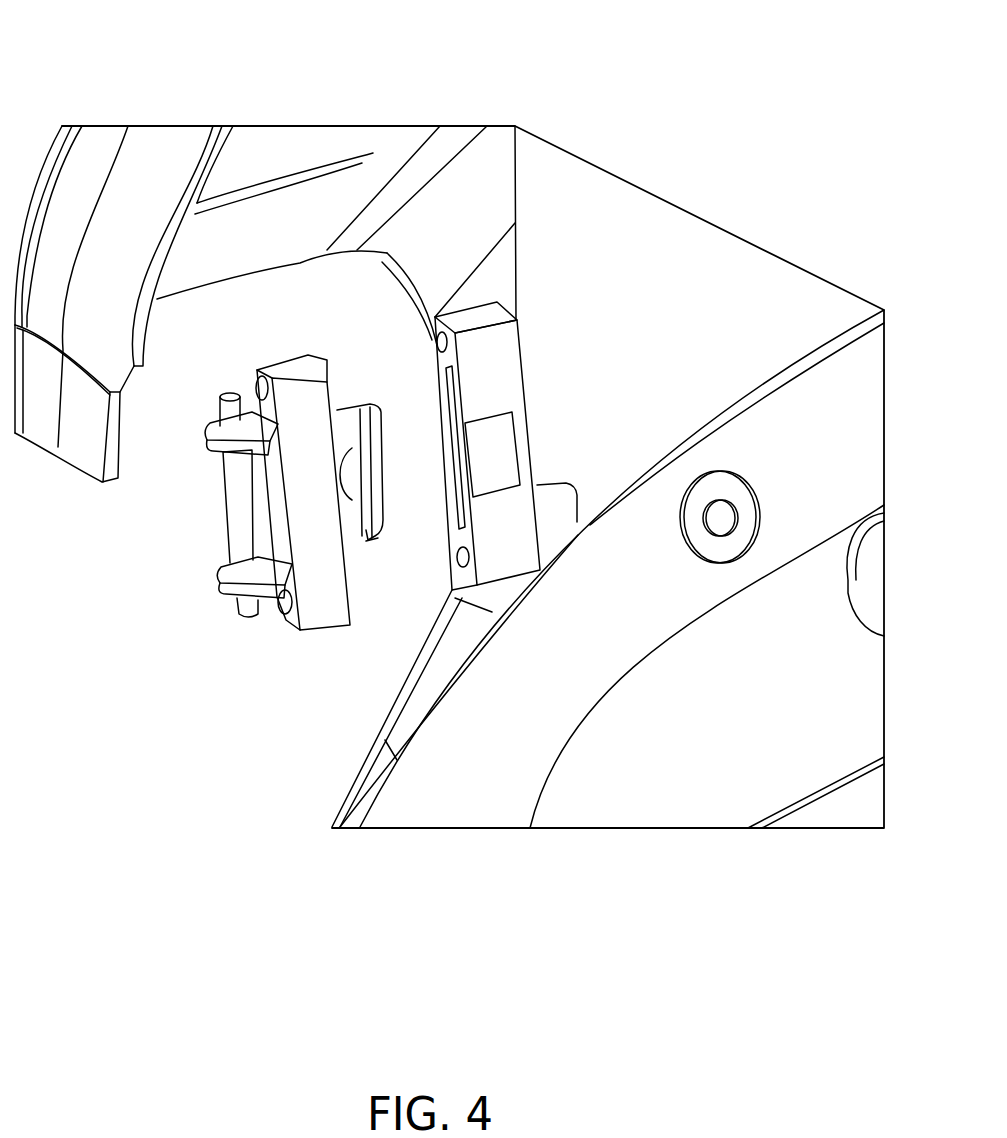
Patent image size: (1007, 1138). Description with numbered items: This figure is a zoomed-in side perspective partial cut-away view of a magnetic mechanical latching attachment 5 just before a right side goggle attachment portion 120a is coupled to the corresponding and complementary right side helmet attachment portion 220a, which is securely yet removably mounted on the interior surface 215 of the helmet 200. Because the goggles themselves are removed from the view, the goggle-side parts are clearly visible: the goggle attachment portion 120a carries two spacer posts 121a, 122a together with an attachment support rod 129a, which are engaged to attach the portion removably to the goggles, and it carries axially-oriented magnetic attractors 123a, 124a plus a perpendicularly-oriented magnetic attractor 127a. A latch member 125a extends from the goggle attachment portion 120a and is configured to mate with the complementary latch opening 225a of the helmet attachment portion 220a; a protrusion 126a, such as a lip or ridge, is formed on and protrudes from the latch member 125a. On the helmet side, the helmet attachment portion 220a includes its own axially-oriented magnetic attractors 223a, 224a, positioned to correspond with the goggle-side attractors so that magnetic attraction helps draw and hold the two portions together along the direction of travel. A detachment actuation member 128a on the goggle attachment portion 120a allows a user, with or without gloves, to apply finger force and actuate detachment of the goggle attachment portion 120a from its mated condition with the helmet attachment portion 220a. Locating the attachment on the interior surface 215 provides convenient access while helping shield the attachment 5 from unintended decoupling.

The magnetic mechanical latching attachment 5 is at (518, 101).
The helmet 200 is at (152, 97).
The interior surface 215 is at (263, 208).
The right side helmet attachment portion 220a is at (473, 312).
The axially-oriented magnetic attractor 223a is at (384, 250).
The axially-oriented magnetic attractor 224a is at (460, 565).
The latch opening 225a is at (440, 377).
The right side goggle attachment portion 120a is at (252, 524).
The spacer post 121a is at (208, 436).
The spacer post 122a is at (216, 578).
The axially-oriented magnetic attractor 123a is at (256, 384).
The axially-oriented magnetic attractor 124a is at (280, 612).
The latch member 125a is at (349, 415).
The protrusion 126a is at (389, 560).
The perpendicularly-oriented magnetic attractor 127a is at (354, 473).
The detachment actuation member 128a is at (327, 623).
The attachment support rod 129a is at (233, 516).